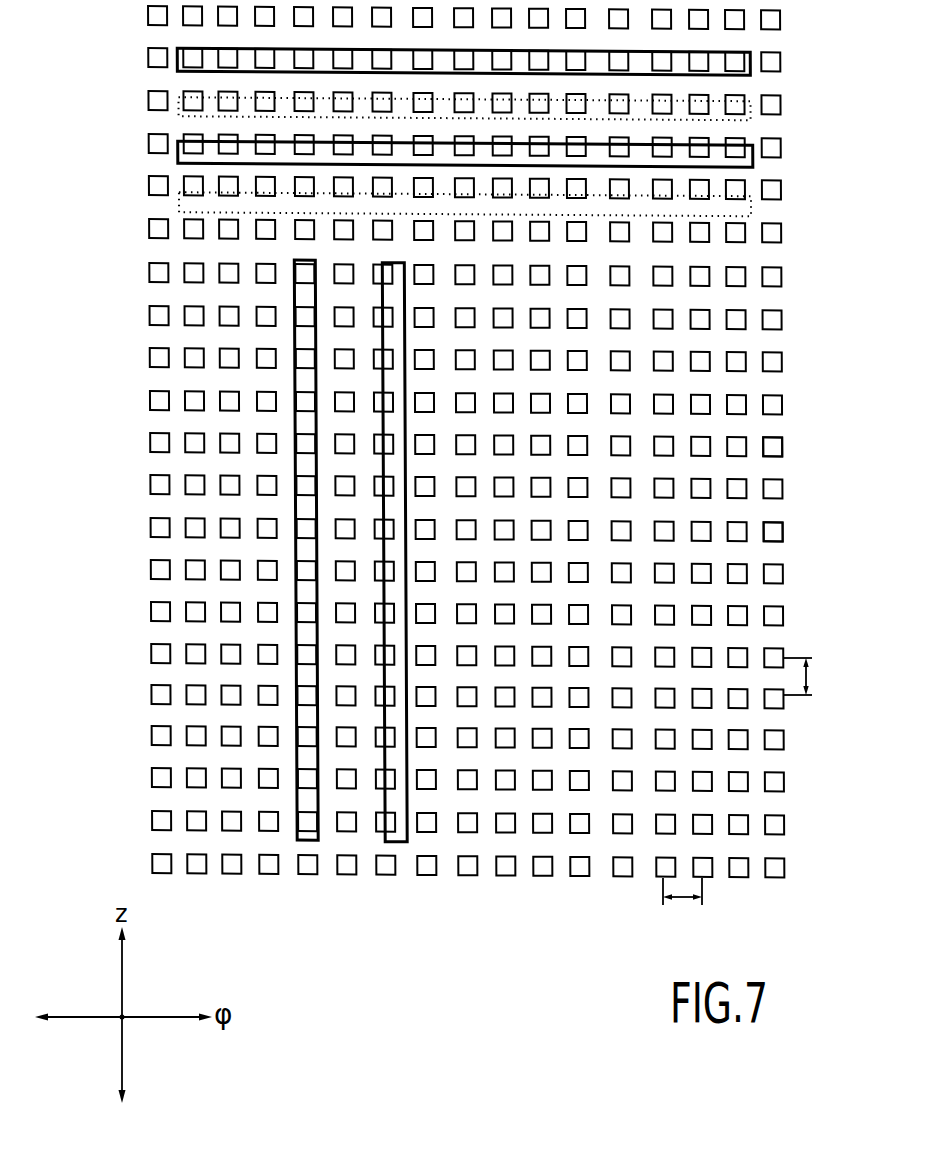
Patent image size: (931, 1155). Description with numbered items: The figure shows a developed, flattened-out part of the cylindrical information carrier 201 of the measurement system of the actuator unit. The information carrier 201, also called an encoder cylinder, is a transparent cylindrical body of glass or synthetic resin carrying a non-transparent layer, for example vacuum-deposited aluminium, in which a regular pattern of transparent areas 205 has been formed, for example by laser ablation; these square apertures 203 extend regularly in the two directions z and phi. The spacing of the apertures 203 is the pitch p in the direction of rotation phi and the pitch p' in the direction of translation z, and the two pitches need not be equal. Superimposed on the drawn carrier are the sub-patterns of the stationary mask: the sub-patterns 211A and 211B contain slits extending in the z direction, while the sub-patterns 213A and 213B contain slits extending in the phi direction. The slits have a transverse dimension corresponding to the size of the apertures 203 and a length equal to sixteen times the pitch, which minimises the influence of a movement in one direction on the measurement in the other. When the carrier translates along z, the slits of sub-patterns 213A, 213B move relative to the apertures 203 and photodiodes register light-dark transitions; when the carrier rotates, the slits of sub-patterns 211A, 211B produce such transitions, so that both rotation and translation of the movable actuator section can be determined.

The cylindrical information carrier 201 is at (797, 279).
The aperture 203 is at (772, 532).
The transparent area 205 is at (765, 470).
The sub-pattern with slits extending in the z direction 211A is at (309, 799).
The sub-pattern with slits extending in the z direction 211B is at (396, 796).
The sub-pattern with slits extending in the phi direction 213A is at (743, 53).
The sub-pattern with slits extending in the phi direction 213B is at (752, 165).
The pitch in the direction of rotation p is at (682, 903).
The pitch in the direction of translation p' is at (811, 676).